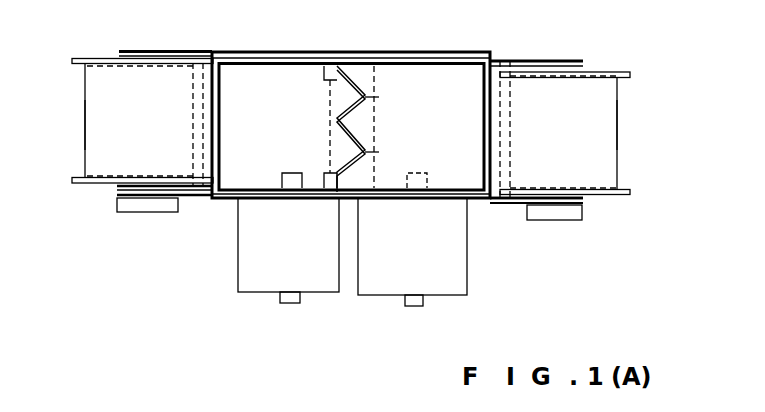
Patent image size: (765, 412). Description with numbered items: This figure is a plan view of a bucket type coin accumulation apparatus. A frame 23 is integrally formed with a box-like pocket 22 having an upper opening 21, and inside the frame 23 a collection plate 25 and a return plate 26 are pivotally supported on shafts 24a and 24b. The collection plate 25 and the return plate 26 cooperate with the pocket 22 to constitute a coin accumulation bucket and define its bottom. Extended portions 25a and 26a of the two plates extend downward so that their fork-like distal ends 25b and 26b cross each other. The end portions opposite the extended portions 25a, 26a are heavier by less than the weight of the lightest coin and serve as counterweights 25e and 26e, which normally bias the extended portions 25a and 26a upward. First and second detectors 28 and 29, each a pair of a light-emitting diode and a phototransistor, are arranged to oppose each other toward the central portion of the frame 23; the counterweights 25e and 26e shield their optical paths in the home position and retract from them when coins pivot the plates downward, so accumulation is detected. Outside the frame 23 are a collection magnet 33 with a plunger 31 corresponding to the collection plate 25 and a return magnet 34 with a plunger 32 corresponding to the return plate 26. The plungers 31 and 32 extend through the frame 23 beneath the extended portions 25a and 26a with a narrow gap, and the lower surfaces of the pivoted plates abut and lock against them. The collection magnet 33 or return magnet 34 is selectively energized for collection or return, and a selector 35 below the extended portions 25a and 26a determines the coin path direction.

The upper opening 21 is at (464, 116).
The box-like pocket 22 is at (491, 163).
The frame 23 is at (512, 207).
The shaft 24a is at (193, 88).
The shaft 24b is at (510, 97).
The collection plate 25 is at (147, 136).
The extended portion 25a is at (250, 78).
The fork-like distal end 25b is at (378, 98).
The counterweight 25e is at (84, 128).
The return plate 26 is at (571, 146).
The extended portion 26a is at (438, 78).
The fork-like distal end 26b is at (325, 125).
The counterweight 26e is at (617, 115).
The first detector 28 is at (160, 213).
The second detector 29 is at (567, 222).
The plunger 31 is at (282, 174).
The plunger 32 is at (426, 182).
The collection magnet 33 is at (252, 293).
The return magnet 34 is at (373, 296).
The selector 35 is at (376, 130).